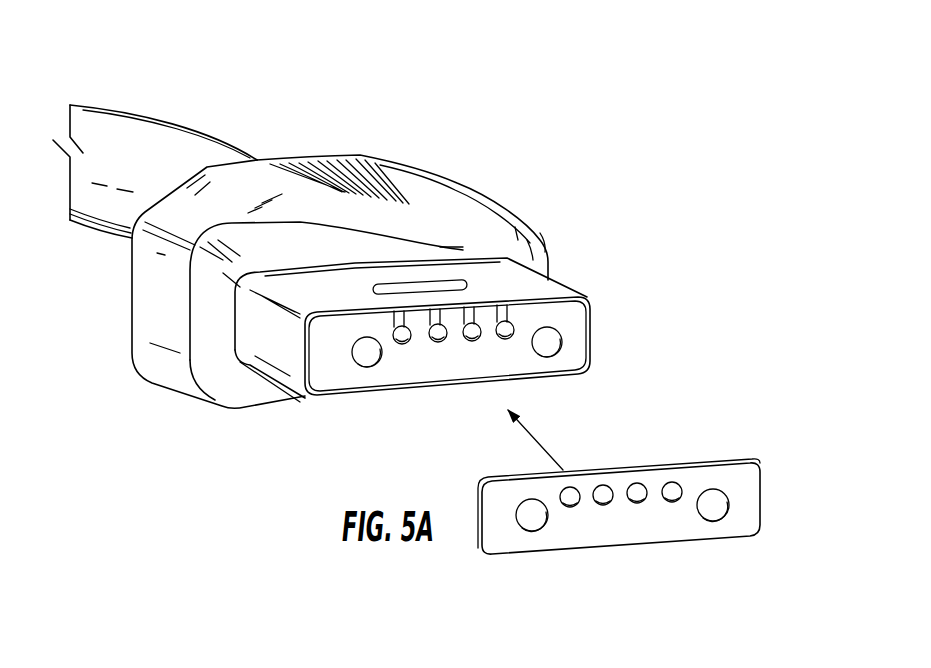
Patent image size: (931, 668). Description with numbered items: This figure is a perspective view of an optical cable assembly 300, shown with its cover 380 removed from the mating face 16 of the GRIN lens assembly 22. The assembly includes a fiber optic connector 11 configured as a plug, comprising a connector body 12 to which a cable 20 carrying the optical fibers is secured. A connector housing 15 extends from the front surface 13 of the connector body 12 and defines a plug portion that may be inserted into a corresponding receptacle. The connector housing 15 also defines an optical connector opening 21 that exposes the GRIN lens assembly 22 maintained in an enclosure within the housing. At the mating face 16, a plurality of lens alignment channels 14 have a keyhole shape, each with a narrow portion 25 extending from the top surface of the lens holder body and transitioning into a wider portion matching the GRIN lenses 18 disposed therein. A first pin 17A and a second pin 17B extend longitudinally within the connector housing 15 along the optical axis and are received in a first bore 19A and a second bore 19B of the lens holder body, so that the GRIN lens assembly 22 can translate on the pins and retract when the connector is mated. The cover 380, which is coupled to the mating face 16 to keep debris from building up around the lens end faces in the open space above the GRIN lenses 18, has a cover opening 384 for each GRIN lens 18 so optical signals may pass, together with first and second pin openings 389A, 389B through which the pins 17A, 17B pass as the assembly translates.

The optical cable assembly 300 is at (541, 140).
The cable 20 is at (160, 121).
The connector body 12 is at (358, 158).
The fiber optic connector 11 is at (445, 168).
The front surface 13 is at (540, 243).
The connector housing 15 is at (593, 297).
The lens alignment channels 14 is at (393, 330).
The narrow portion 25 is at (425, 322).
The first pin 17A is at (355, 354).
The second pin 17B is at (558, 341).
The GRIN lenses 18 is at (438, 342).
The first bore 19A is at (330, 394).
The second bore 19B is at (589, 376).
The optical connector opening 21 is at (367, 393).
The GRIN lens assembly 22 is at (425, 375).
The mating face 16 is at (470, 372).
The cover 380 is at (798, 493).
The first pin opening 389A is at (540, 524).
The second pin opening 389B is at (716, 513).
The cover opening 384 is at (572, 507).